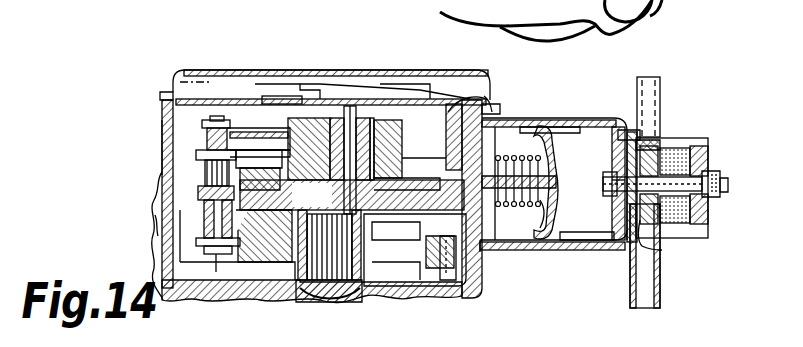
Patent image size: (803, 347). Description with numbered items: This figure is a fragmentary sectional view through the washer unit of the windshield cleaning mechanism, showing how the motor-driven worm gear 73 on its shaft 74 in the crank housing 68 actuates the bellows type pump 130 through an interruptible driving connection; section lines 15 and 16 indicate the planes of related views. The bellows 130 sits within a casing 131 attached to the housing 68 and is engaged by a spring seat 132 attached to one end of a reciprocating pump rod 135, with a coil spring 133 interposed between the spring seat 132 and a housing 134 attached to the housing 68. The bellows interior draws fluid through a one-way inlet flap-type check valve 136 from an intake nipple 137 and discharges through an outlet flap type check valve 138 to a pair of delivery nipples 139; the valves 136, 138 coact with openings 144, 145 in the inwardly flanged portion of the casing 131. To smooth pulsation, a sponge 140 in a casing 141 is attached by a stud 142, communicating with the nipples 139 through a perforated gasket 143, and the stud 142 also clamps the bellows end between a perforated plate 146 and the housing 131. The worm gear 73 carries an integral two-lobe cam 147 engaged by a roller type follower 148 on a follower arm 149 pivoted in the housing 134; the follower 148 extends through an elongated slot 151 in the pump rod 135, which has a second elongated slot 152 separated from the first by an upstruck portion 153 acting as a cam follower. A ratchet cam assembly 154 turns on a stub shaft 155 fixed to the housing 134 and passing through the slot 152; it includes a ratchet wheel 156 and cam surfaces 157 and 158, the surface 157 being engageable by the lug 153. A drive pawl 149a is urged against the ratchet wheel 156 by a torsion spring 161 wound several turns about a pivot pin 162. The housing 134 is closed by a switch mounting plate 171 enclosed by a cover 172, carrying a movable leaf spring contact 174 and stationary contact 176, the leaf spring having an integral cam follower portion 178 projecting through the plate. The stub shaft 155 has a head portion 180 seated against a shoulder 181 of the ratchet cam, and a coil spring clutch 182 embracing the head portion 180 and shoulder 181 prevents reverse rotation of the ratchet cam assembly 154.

The section line 15 is at (129, 220).
The section line 16 is at (188, 104).
The crank housing 68 is at (186, 302).
The worm gear 73 is at (437, 258).
The shaft 74 is at (338, 290).
The bellows type pump 130 is at (588, 119).
The casing 131 is at (552, 119).
The spring seat 132 is at (534, 134).
The coil spring 133 is at (520, 219).
The housing 134 is at (486, 250).
The reciprocating pump rod 135 is at (456, 148).
The one-way inlet flap-type check valve 136 is at (664, 250).
The intake nipple 137 is at (662, 296).
The outlet flap type check valve 138 is at (660, 140).
The delivery nipples 139 is at (652, 78).
The sponge 140 is at (700, 152).
The casing 141 is at (700, 222).
The stud 142 is at (732, 183).
The perforated gasket 143 is at (672, 138).
The opening 144 is at (600, 250).
The opening 145 is at (612, 152).
The perforated plate 146 is at (612, 206).
The two-lobe cam 147 is at (427, 256).
The roller type follower 148 is at (158, 230).
The follower arm 149 is at (163, 168).
The drive pawl 149a is at (207, 130).
The elongated slot 151 is at (248, 214).
The second elongated slot 152 is at (237, 247).
The upstruck portion 153 is at (258, 139).
The ratchet cam assembly 154 is at (295, 142).
The stub shaft 155 is at (343, 150).
The ratchet wheel 156 is at (402, 160).
The cam surface 157 is at (415, 250).
The cam surface 158 is at (490, 97).
The torsion spring 161 is at (206, 154).
The pivot pin 162 is at (218, 120).
The switch mounting plate 171 is at (470, 100).
The cover 172 is at (494, 106).
The movable leaf spring contact 174 is at (382, 120).
The stationary contact 176 is at (427, 208).
The cam follower portion 178 is at (325, 118).
The head portion 180 is at (362, 172).
The shoulder 181 is at (352, 195).
The coil spring clutch 182 is at (350, 116).